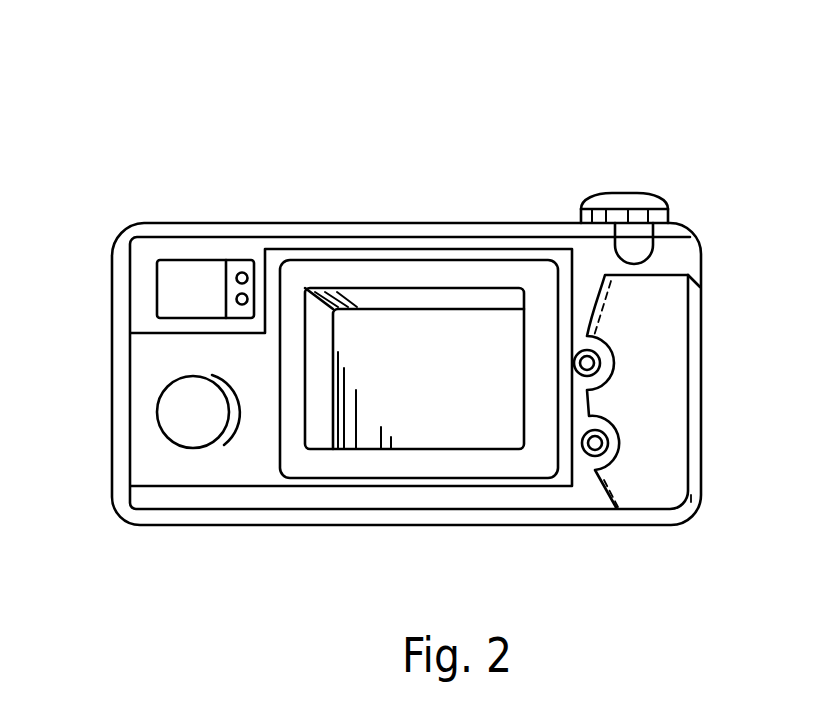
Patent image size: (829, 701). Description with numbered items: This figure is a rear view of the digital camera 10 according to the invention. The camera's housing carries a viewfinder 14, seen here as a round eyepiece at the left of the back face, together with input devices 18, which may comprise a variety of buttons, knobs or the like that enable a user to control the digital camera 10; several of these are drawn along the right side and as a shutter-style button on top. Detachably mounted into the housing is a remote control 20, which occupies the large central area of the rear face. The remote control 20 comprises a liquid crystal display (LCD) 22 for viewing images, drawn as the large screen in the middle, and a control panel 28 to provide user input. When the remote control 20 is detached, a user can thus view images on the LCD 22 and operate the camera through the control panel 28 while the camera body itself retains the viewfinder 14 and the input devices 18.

The digital camera 10 is at (572, 105).
The viewfinder 14 is at (187, 277).
The input devices 18 is at (634, 188).
The remote control 20 is at (198, 492).
The liquid crystal display (LCD) 22 is at (431, 413).
The control panel 28 is at (175, 411).